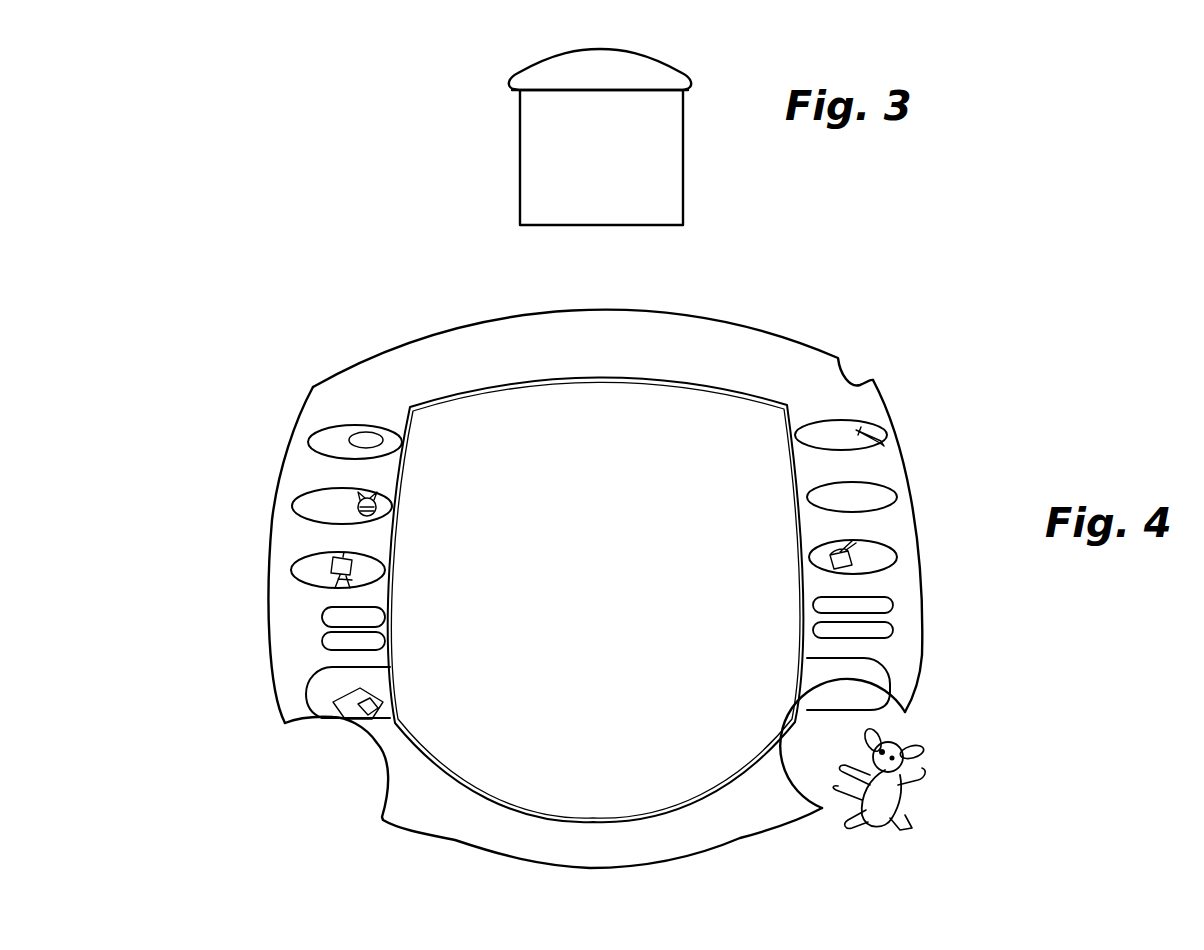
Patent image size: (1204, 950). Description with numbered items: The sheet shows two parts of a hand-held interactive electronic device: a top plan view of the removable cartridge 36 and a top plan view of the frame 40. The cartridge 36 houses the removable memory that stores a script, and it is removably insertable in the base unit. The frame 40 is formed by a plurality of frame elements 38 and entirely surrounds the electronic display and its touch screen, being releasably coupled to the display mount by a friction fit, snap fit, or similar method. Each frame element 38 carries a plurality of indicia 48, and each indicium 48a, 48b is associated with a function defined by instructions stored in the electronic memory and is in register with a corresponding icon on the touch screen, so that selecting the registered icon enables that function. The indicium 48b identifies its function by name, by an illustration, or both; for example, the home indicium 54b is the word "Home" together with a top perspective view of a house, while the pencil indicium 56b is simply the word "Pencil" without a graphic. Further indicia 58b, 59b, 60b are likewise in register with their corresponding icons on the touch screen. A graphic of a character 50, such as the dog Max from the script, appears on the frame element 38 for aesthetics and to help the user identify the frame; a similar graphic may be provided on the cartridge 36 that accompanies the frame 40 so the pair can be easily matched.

In FIG. 3, the cartridge 36 is at (553, 75).
In FIG. 4, the frame 40 is at (468, 324).
In FIG. 4, the frame element 38 is at (293, 537).
In FIG. 4, the plurality of indicia 48 is at (608, 470).
In FIG. 4, the indicium 48a is at (398, 444).
In FIG. 4, the indicium 48b is at (608, 630).
In FIG. 4, the pencil indicium 56b is at (322, 617).
In FIG. 4, the home indicium 54b is at (353, 705).
In FIG. 4, the indicium 58b is at (893, 606).
In FIG. 4, the indicium 59b is at (883, 637).
In FIG. 4, the indicium 60b is at (907, 708).
In FIG. 4, the character 50 is at (950, 797).